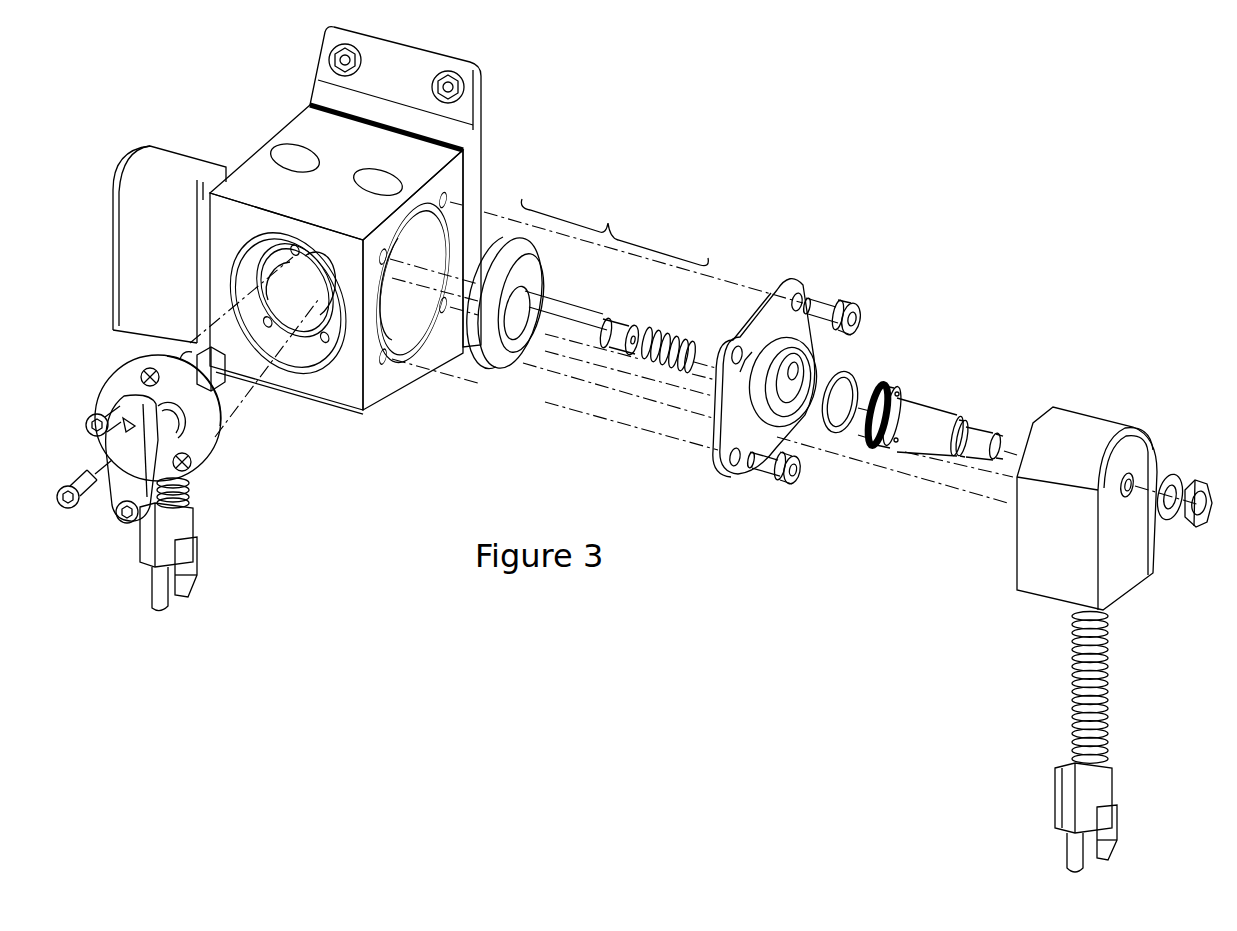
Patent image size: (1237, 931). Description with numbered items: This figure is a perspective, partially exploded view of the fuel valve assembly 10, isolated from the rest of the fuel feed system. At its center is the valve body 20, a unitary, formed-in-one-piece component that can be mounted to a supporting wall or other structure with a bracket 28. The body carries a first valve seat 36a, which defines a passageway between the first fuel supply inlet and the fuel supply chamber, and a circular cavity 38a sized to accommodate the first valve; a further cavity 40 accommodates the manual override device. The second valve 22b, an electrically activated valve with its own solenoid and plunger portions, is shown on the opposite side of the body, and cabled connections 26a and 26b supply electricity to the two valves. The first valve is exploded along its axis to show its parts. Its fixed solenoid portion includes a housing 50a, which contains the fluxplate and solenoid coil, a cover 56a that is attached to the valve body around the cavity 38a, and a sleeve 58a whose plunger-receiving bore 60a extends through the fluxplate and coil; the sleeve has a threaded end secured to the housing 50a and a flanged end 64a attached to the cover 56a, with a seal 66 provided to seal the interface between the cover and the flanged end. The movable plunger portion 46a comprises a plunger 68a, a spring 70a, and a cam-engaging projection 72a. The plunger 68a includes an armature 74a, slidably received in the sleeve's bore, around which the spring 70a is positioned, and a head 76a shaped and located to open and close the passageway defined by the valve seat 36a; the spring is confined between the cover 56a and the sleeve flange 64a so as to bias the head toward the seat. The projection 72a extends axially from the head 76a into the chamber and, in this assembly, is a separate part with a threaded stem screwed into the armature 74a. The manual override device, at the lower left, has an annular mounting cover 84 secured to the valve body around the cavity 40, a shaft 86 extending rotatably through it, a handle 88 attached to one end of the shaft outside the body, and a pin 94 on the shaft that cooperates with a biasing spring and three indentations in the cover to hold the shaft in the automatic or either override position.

The fuel valve assembly 10 is at (500, 85).
The valve body 20 is at (303, 123).
The second valve 22b is at (165, 155).
The cabled connection 26a is at (1100, 690).
The cabled connection 26b is at (200, 499).
The bracket 28 is at (405, 72).
The first valve seat 36a is at (414, 256).
The circular cavity 38a is at (388, 252).
The cavity 40 is at (322, 352).
The movable plunger portion 46a is at (614, 232).
The housing 50a is at (1100, 432).
The cover 56a is at (801, 288).
The sleeve 58a is at (934, 414).
The plunger-receiving bore 60a is at (988, 433).
The flanged end 64a is at (889, 392).
The O-ring 66 is at (855, 382).
The plunger 68a is at (608, 304).
The spring 70a is at (682, 336).
The cam-engaging projection 72a is at (538, 262).
The armature 74a is at (571, 312).
The head 76a is at (522, 256).
The annular mounting cover 84 is at (198, 437).
The shaft 86 is at (231, 398).
The handle 88 is at (122, 450).
The pin 94 is at (110, 378).